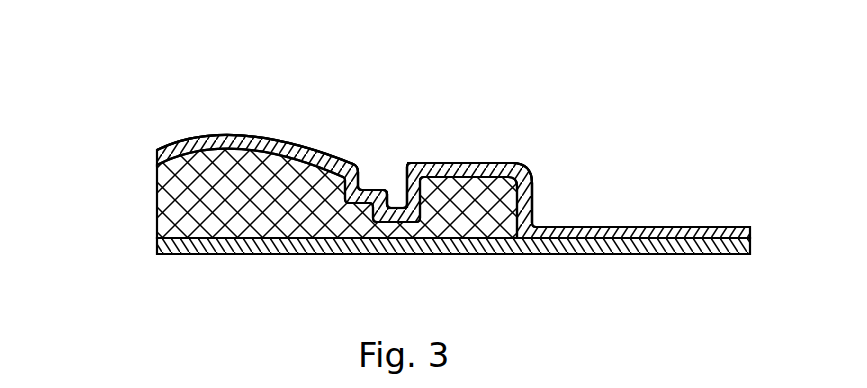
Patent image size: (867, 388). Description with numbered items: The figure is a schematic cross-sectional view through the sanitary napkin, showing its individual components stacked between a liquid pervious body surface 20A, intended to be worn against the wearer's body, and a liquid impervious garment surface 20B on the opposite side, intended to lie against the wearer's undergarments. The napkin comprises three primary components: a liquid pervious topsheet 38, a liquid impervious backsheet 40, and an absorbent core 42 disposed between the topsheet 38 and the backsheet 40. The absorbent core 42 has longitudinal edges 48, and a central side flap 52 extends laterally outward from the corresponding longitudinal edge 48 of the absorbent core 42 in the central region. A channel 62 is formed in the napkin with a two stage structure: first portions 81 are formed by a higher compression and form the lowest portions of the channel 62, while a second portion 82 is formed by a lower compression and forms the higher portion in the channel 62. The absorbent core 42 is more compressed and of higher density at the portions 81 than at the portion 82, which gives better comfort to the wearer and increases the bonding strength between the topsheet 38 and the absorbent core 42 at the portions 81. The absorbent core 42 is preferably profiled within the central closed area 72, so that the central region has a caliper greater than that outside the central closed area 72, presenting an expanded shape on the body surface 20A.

The body surface 20A is at (549, 118).
The garment surface 20B is at (545, 296).
The topsheet 38 is at (192, 149).
The backsheet 40 is at (266, 254).
The absorbent core 42 is at (172, 183).
The longitudinal edge 48 is at (533, 196).
The central side flap 52 is at (674, 212).
The channel 62 is at (389, 138).
The central closed area 72 is at (262, 128).
The first portion of higher compression 81 is at (402, 205).
The second portion of lower compression 82 is at (373, 205).